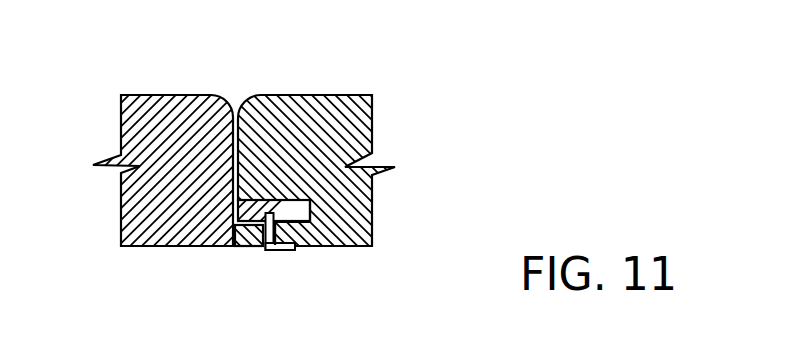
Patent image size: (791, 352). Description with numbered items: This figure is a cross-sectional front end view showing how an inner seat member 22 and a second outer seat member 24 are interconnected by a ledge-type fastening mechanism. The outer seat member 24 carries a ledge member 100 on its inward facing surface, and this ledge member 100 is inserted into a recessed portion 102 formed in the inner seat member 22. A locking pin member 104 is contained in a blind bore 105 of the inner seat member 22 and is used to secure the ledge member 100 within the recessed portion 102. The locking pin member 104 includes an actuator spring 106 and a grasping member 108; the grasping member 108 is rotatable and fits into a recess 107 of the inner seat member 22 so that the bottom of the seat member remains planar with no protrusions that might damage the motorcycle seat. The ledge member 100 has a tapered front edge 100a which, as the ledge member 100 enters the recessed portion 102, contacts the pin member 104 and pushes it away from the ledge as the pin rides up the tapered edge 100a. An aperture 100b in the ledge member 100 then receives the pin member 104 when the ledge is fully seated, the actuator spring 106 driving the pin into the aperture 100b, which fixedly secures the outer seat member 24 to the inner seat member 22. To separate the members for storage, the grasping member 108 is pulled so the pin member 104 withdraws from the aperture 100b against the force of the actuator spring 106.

The inner seat member 22 is at (202, 95).
The second outer seat member 24 is at (297, 95).
The ledge member 100 is at (263, 214).
The tapered front edge 100a is at (330, 246).
The aperture 100b is at (262, 208).
The recessed portion 102 is at (300, 212).
The locking pin member 104 is at (252, 247).
The blind bore 105 is at (345, 222).
The actuator spring 106 is at (263, 249).
The recess 107 is at (318, 247).
The grasping member 108 is at (288, 250).